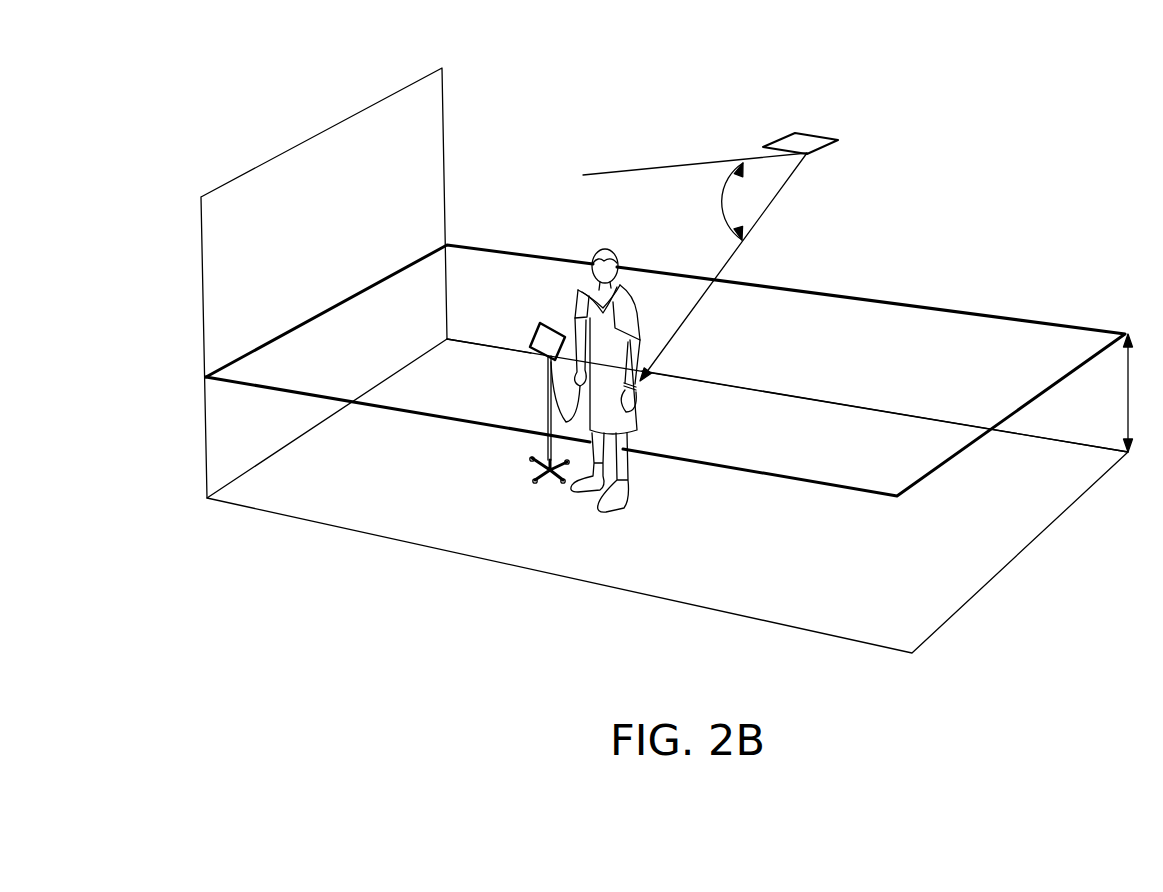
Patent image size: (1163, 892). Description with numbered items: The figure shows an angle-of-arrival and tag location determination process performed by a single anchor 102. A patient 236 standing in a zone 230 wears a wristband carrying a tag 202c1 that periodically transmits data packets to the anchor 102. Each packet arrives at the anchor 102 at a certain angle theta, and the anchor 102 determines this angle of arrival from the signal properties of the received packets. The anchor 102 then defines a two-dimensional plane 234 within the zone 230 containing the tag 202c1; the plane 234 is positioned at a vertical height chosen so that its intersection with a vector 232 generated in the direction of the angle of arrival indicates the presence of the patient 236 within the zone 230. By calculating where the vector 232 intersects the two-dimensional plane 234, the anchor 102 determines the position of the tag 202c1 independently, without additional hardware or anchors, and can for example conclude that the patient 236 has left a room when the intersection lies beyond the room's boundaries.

The zone 230 is at (570, 55).
The anchor 102 is at (800, 145).
The vector 232 is at (777, 202).
The two-dimensional plane 234 is at (953, 297).
The patient 236 is at (603, 248).
The tag 202c1 is at (639, 389).